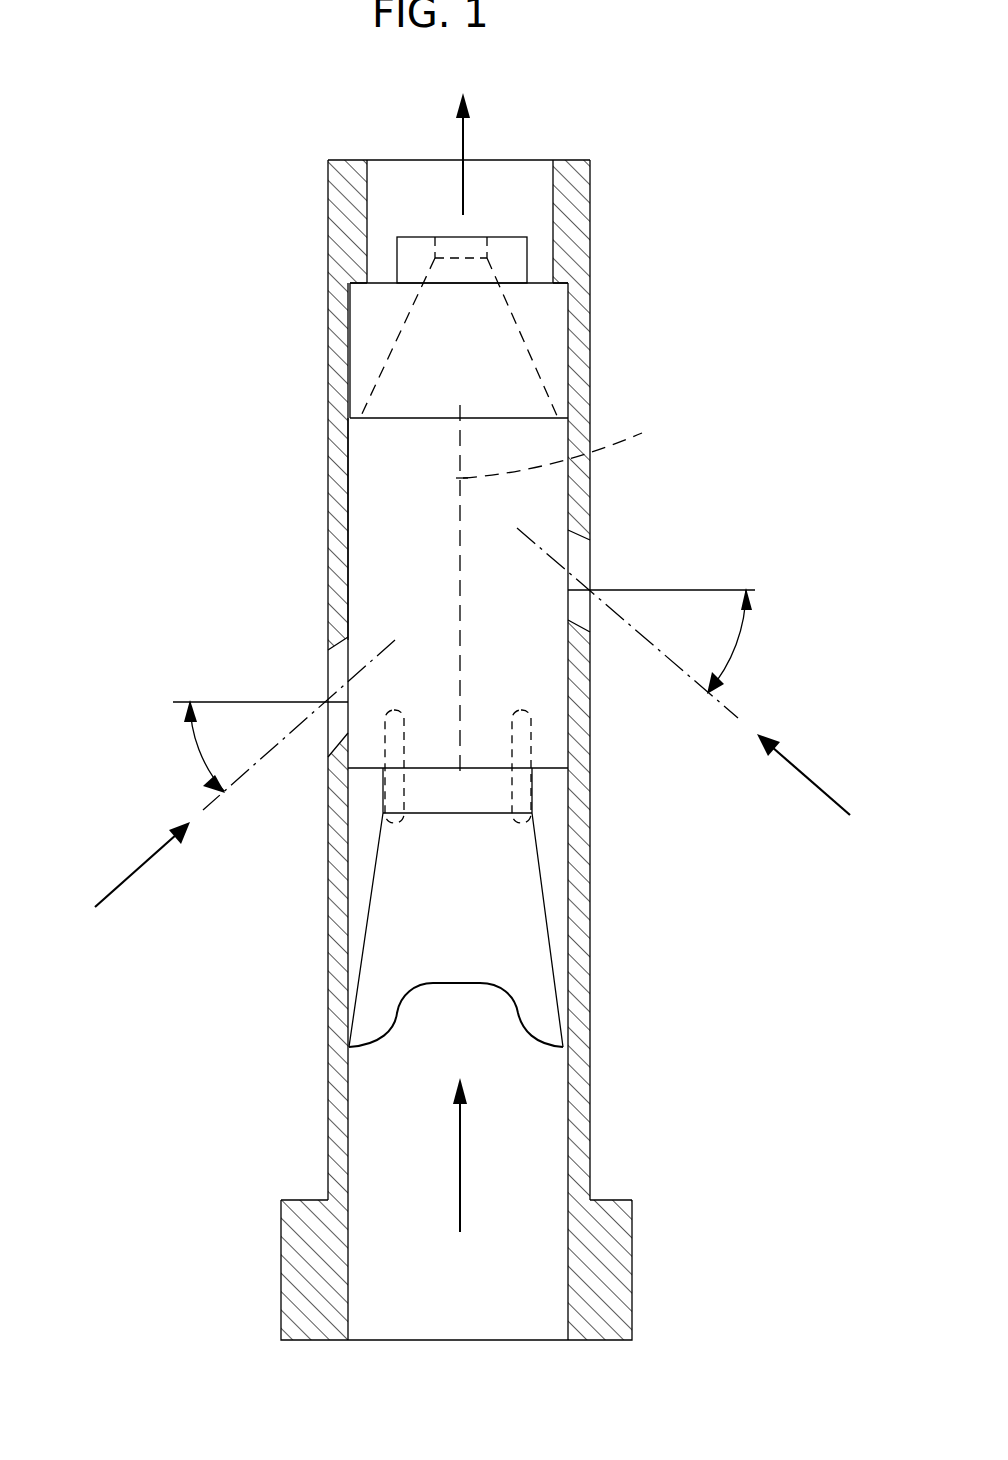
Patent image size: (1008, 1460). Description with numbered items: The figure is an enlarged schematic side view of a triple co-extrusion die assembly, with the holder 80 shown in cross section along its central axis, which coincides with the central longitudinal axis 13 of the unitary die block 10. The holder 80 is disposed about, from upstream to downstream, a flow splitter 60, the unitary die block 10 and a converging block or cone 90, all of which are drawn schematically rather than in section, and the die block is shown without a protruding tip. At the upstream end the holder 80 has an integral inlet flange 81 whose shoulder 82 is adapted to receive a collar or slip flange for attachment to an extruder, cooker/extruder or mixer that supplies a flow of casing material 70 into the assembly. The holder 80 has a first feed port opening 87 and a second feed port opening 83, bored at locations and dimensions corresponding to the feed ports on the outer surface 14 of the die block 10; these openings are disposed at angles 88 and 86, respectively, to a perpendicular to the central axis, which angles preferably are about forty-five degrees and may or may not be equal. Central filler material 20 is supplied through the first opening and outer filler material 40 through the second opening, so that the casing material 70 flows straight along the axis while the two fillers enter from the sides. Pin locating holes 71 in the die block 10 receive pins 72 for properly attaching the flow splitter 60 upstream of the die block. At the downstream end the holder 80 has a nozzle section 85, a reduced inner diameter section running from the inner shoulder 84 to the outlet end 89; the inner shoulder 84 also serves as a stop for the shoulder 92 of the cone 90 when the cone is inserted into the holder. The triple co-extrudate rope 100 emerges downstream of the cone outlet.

The unitary die block 10 is at (408, 548).
The central longitudinal axis 13 is at (567, 448).
The outer surface 14 is at (345, 462).
The central filler material 20 is at (128, 877).
The outer filler material 40 is at (808, 784).
The flow splitter 60 is at (403, 912).
The casing material 70 is at (462, 1195).
The pin locating holes 71 is at (383, 745).
The pins 72 is at (385, 794).
The holder 80 is at (652, 947).
The inlet flange 81 is at (633, 1250).
The shoulder 82 is at (608, 1200).
The second feed port opening 83 is at (590, 560).
The inner shoulder 84 is at (348, 273).
The nozzle section 85 is at (412, 215).
The angle 86 is at (737, 645).
The first feed port opening 87 is at (327, 675).
The angle 88 is at (190, 758).
The outlet end 89 is at (577, 160).
The converging block or cone 90 is at (555, 330).
The shoulder 92 is at (540, 283).
The triple co-extrudate rope 100 is at (463, 138).